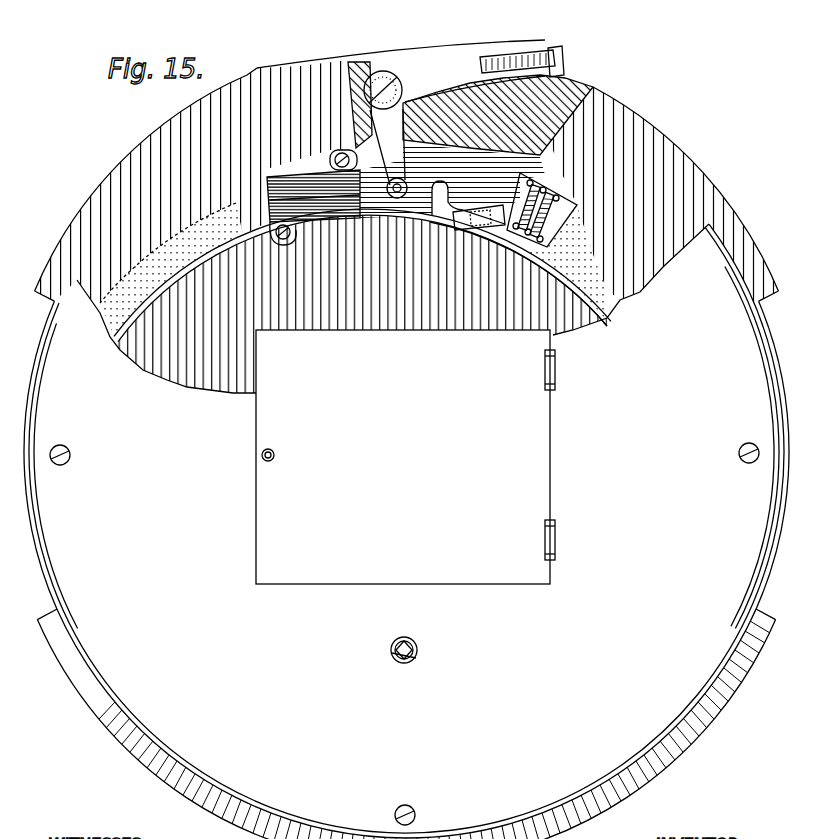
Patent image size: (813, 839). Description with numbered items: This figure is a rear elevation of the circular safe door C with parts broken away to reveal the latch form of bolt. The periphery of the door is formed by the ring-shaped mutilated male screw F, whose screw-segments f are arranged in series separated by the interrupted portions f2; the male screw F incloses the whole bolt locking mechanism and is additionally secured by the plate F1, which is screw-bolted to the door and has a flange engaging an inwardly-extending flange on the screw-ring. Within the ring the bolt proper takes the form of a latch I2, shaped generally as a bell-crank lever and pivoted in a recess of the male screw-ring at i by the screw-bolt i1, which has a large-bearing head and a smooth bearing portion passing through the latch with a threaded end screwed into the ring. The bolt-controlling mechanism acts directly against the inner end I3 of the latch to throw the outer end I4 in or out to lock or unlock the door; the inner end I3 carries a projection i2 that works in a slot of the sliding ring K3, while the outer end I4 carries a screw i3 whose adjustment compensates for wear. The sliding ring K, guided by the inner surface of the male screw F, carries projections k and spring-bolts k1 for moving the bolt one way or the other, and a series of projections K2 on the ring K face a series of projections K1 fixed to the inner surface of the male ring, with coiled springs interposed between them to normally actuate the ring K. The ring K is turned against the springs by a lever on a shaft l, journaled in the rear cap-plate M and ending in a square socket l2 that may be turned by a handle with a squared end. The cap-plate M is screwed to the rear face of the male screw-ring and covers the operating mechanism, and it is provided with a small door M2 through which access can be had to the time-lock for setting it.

The mutilated male screw F is at (406, 453).
The plate F1 is at (407, 226).
The screw-segments f is at (115, 178).
The interrupted portions f2 is at (268, 75).
The door C is at (362, 301).
The rear cap-plate M is at (404, 634).
The door M2 is at (405, 457).
The shaft l is at (416, 645).
The square socket l2 is at (416, 658).
The latch I2 is at (425, 129).
The inner end of latch I3 is at (390, 157).
The outer end of latch I4 is at (548, 50).
The pivot i is at (377, 72).
The screw-bolt i1 is at (350, 62).
The projection i2 is at (397, 198).
The screw i3 is at (564, 58).
The sliding ring K is at (537, 263).
The projections K1 is at (520, 212).
The projections K2 is at (578, 196).
The sliding ring K3 is at (648, 322).
The projections k is at (450, 227).
The spring-bolts k1 is at (305, 190).